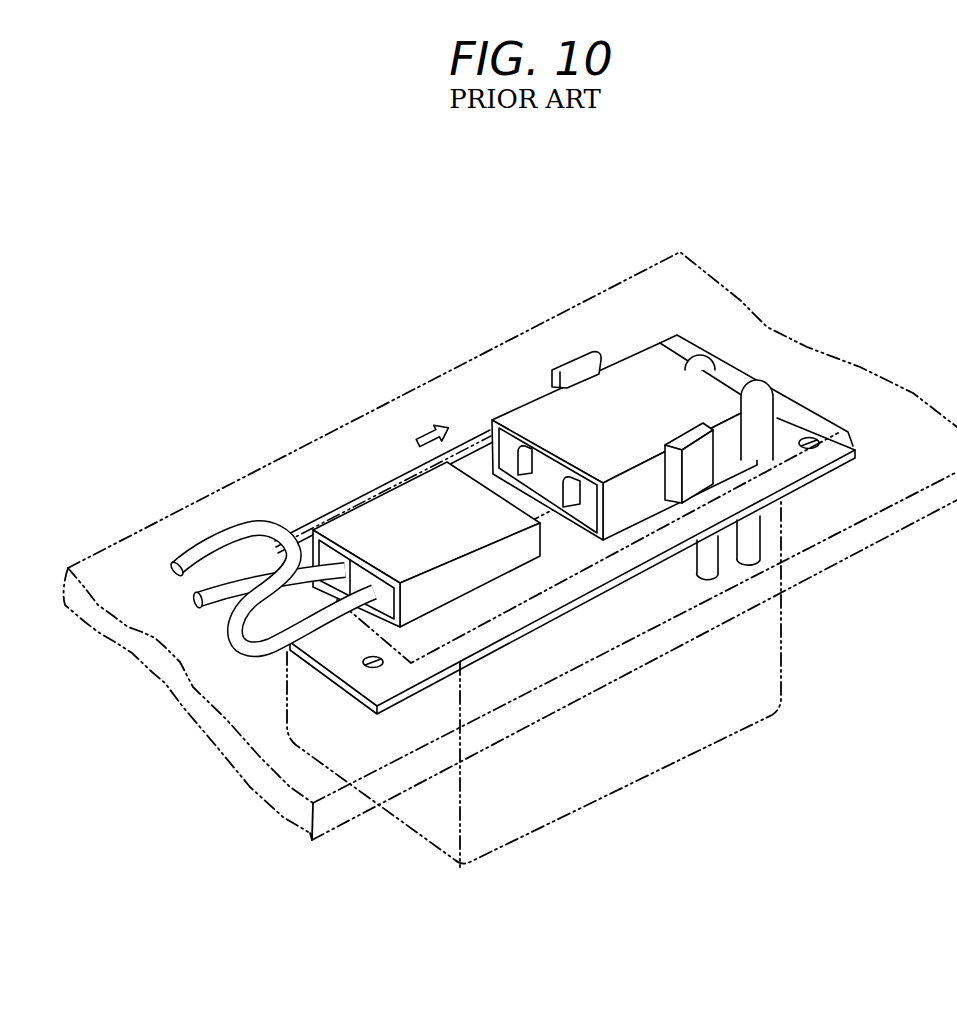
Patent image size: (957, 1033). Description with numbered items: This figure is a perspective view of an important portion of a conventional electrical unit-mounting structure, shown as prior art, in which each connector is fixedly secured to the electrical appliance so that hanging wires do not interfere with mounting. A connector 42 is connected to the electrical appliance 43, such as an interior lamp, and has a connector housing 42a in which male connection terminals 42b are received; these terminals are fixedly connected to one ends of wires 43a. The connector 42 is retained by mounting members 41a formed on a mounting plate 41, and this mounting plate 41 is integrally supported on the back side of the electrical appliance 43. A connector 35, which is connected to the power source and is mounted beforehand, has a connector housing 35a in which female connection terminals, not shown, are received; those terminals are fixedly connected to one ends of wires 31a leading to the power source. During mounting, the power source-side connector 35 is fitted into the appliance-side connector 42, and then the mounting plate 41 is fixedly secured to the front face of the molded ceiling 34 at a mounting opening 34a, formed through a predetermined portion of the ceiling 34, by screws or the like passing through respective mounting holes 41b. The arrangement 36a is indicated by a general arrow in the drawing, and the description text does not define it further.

The wires 31a is at (250, 558).
The molded ceiling 34 is at (812, 346).
The mounting opening 34a is at (499, 611).
The connector 35 is at (366, 476).
The connector housing 35a is at (360, 528).
The electrical connection unit 36a is at (328, 326).
The mounting plate 41 is at (583, 553).
The mounting members 41a is at (703, 460).
The mounting holes 41b is at (812, 438).
The connector 42 is at (617, 383).
The connector housing 42a is at (625, 368).
The male connection terminals 42b is at (483, 430).
The electrical appliance 43 is at (640, 760).
The wires 43a is at (713, 563).